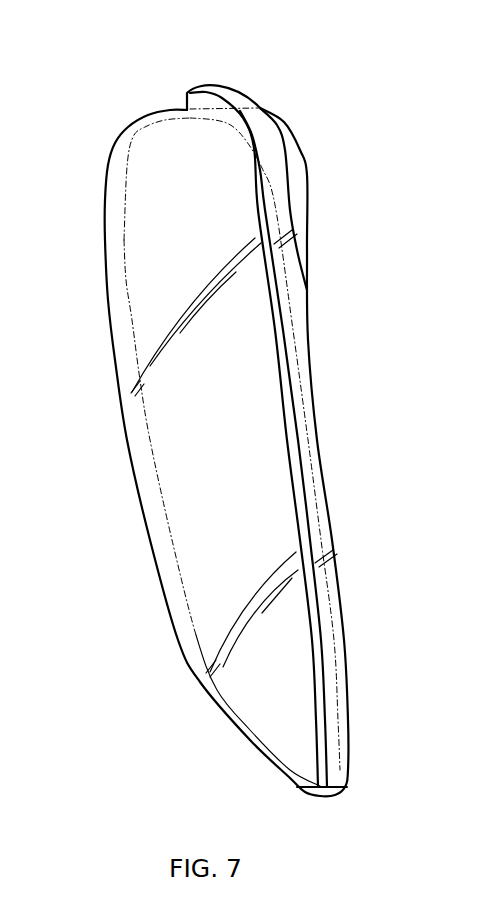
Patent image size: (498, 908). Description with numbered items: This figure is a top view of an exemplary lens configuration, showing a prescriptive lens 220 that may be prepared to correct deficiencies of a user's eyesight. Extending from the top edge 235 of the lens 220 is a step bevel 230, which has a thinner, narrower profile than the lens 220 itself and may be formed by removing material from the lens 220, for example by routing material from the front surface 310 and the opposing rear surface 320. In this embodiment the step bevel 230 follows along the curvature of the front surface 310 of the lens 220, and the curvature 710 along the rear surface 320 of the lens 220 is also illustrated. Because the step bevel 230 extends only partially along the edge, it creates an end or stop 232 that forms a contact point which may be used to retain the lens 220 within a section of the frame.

The lens 220 is at (160, 273).
The step bevel 230 is at (232, 98).
The stop 232 is at (183, 101).
The top edge 235 is at (283, 133).
The front surface 310 is at (128, 345).
The rear surface 320 is at (307, 317).
The curvature 710 is at (307, 201).